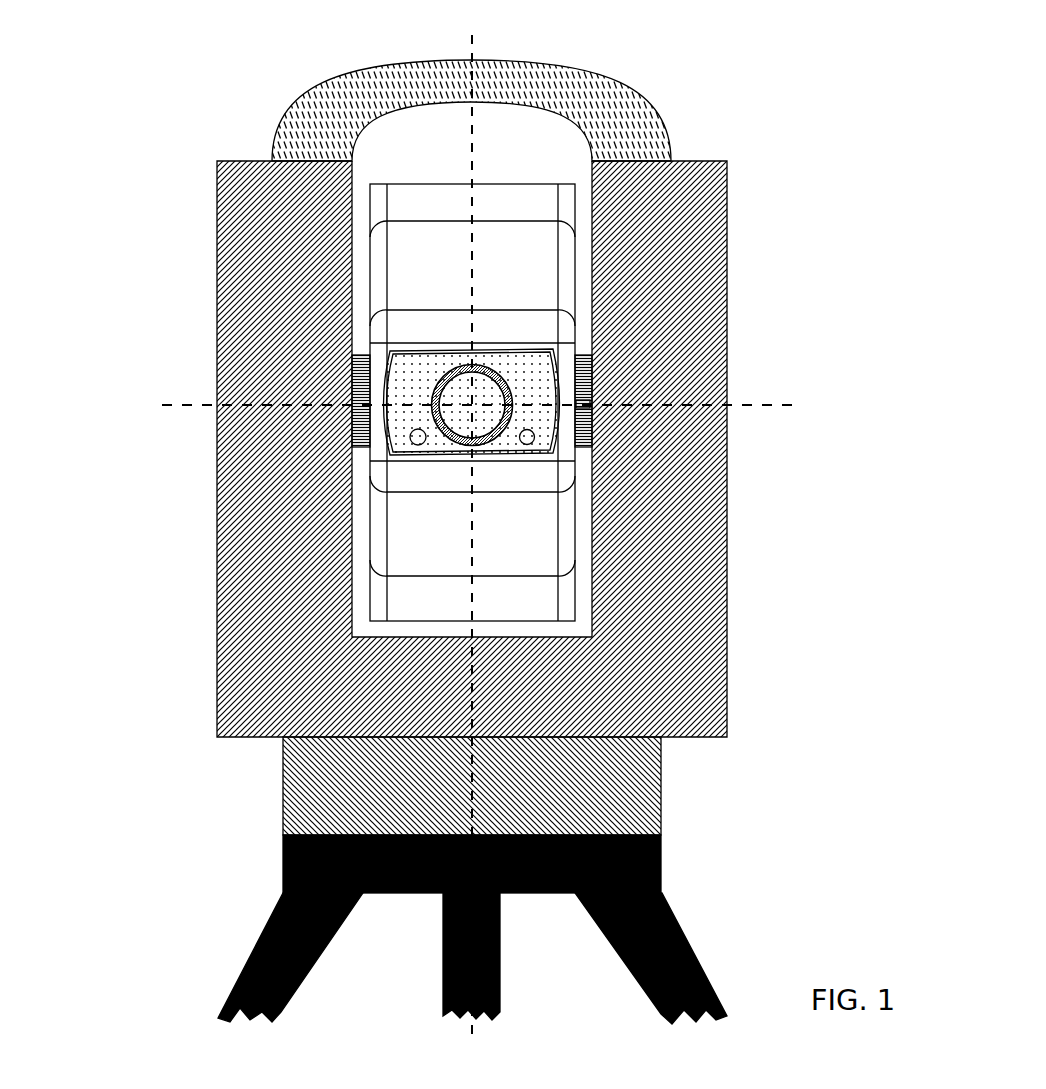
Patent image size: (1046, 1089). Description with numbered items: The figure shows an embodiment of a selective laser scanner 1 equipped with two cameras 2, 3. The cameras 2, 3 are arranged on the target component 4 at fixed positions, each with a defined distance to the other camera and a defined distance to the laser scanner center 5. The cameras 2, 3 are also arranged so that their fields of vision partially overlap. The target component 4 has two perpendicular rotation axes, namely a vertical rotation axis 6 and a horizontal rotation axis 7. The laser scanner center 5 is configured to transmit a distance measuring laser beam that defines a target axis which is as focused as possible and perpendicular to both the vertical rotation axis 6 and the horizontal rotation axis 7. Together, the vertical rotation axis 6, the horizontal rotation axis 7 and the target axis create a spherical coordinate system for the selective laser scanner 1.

The selective laser scanner 1 is at (782, 118).
The camera 2 is at (533, 432).
The camera 3 is at (412, 431).
The target component 4 is at (430, 290).
The laser scanner center 5 is at (493, 387).
The vertical rotation axis 6 is at (470, 38).
The horizontal rotation axis 7 is at (793, 404).